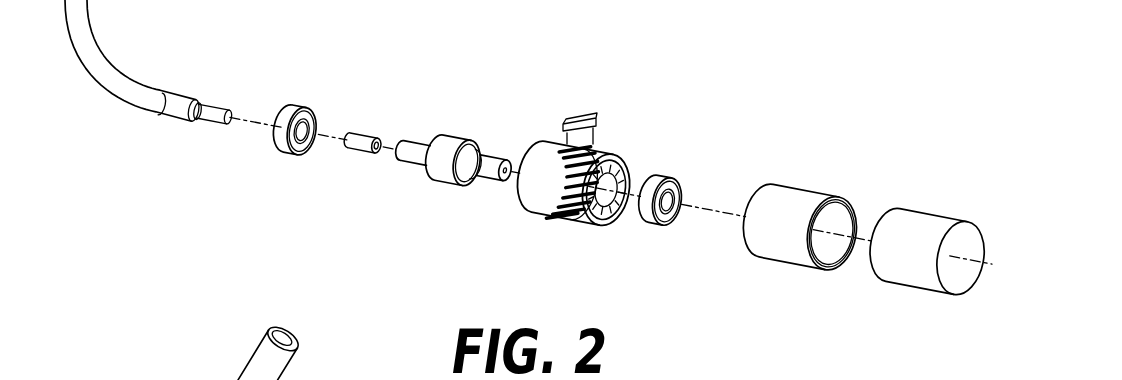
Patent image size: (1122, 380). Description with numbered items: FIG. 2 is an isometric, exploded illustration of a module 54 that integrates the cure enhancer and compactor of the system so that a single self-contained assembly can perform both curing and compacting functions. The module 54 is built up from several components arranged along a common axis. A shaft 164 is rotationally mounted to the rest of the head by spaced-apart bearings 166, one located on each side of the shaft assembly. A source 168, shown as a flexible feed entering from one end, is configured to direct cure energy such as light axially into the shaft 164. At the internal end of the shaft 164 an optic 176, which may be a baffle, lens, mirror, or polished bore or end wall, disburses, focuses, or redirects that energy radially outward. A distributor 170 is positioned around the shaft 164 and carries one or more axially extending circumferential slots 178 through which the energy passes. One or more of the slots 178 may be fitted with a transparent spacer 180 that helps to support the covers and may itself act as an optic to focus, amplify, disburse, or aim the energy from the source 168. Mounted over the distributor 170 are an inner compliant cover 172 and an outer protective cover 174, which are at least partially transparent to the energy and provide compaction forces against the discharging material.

The module 54 is at (858, 66).
The shaft 164 is at (447, 148).
The bearings 166 is at (304, 97).
The source 168 is at (170, 100).
The distributor 170 is at (552, 205).
The inner compliant cover 172 is at (814, 186).
The outer protective cover 174 is at (916, 206).
The optic 176 is at (374, 132).
The axially extending circumferential slots 178 is at (553, 212).
The transparent spacer 180 is at (584, 118).